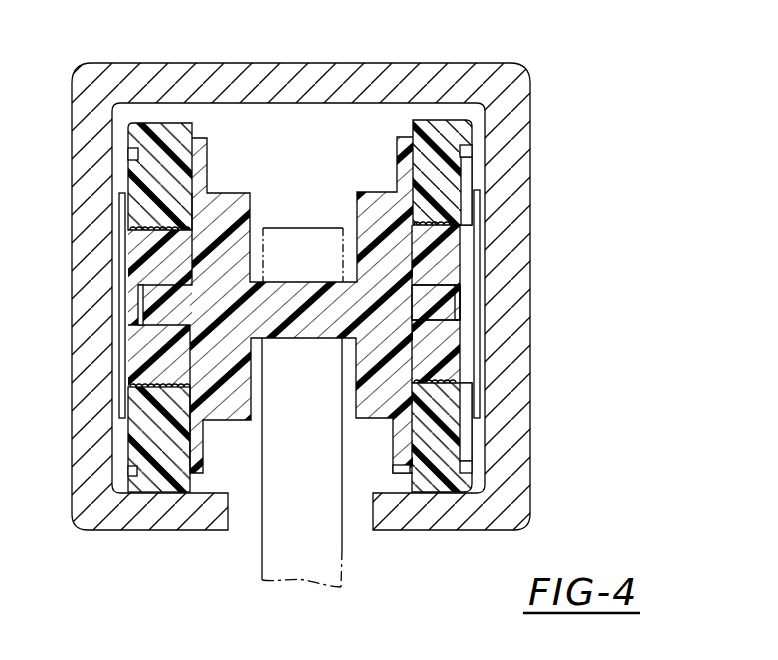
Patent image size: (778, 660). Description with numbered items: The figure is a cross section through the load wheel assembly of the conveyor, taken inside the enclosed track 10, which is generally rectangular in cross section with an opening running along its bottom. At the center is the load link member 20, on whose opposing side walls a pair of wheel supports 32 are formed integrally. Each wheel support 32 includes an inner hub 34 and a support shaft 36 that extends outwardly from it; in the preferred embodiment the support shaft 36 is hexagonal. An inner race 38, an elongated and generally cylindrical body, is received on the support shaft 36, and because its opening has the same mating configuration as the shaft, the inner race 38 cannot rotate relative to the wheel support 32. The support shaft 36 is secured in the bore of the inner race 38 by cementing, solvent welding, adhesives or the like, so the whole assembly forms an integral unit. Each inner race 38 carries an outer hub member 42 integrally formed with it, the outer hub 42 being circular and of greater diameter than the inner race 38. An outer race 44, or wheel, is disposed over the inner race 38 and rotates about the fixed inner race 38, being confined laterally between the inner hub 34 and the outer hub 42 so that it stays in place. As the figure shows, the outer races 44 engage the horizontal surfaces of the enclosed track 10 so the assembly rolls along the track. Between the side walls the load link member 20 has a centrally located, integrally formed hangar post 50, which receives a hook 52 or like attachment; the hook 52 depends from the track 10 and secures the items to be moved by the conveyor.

The enclosed track 10 is at (531, 127).
The load link member 20 is at (373, 418).
The wheel support 32 is at (388, 152).
The inner hub 34 is at (400, 470).
The support shaft 36 is at (453, 315).
The inner race 38 is at (464, 247).
The outer hub member 42 is at (466, 173).
The outer race 44 is at (471, 128).
The hangar post 50 is at (276, 288).
The hook 52 is at (262, 548).